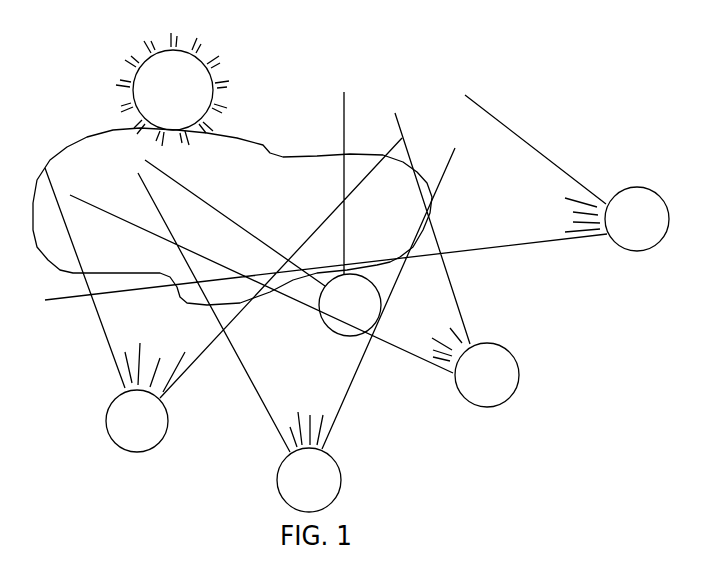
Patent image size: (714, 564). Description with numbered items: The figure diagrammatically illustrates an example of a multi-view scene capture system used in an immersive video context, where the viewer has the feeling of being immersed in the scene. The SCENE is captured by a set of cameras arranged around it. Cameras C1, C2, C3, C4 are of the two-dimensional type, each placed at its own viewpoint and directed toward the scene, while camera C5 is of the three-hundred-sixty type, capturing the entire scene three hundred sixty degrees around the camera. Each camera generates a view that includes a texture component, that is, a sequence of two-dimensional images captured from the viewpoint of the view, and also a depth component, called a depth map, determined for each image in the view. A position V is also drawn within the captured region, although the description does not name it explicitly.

The camera C1 is at (145, 397).
The camera C2 is at (309, 462).
The camera C3 is at (475, 367).
The camera C4 is at (617, 219).
The camera C5 is at (172, 89).
The virtual viewpoint V is at (350, 305).
The scene SCENE is at (280, 186).